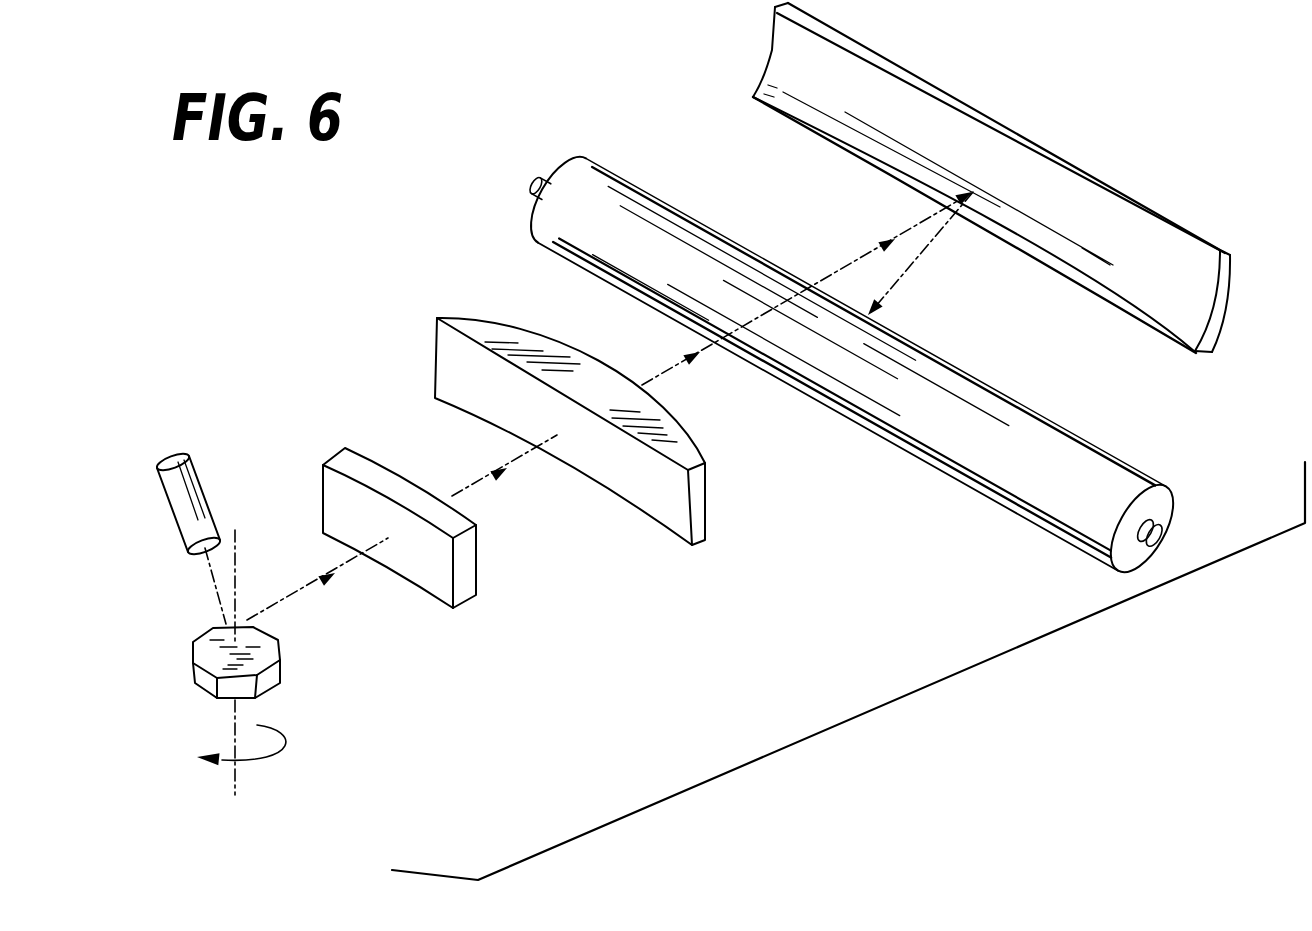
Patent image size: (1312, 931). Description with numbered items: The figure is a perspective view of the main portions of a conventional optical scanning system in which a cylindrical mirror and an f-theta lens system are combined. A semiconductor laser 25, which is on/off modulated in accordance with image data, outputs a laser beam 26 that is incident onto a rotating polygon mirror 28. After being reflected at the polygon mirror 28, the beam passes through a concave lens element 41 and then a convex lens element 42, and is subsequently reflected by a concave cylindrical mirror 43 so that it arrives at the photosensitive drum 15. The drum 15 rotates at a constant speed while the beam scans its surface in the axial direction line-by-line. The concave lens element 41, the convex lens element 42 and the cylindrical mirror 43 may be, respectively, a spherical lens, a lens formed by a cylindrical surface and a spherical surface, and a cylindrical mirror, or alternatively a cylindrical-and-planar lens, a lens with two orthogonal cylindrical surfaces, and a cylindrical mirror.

The photosensitive drum 15 is at (1088, 458).
The semiconductor laser 25 is at (185, 505).
The laser beam 26 is at (211, 563).
The polygon mirror 28 is at (272, 653).
The concave lens element 41 is at (468, 565).
The convex lens element 42 is at (702, 485).
The concave cylindrical mirror 43 is at (1138, 202).